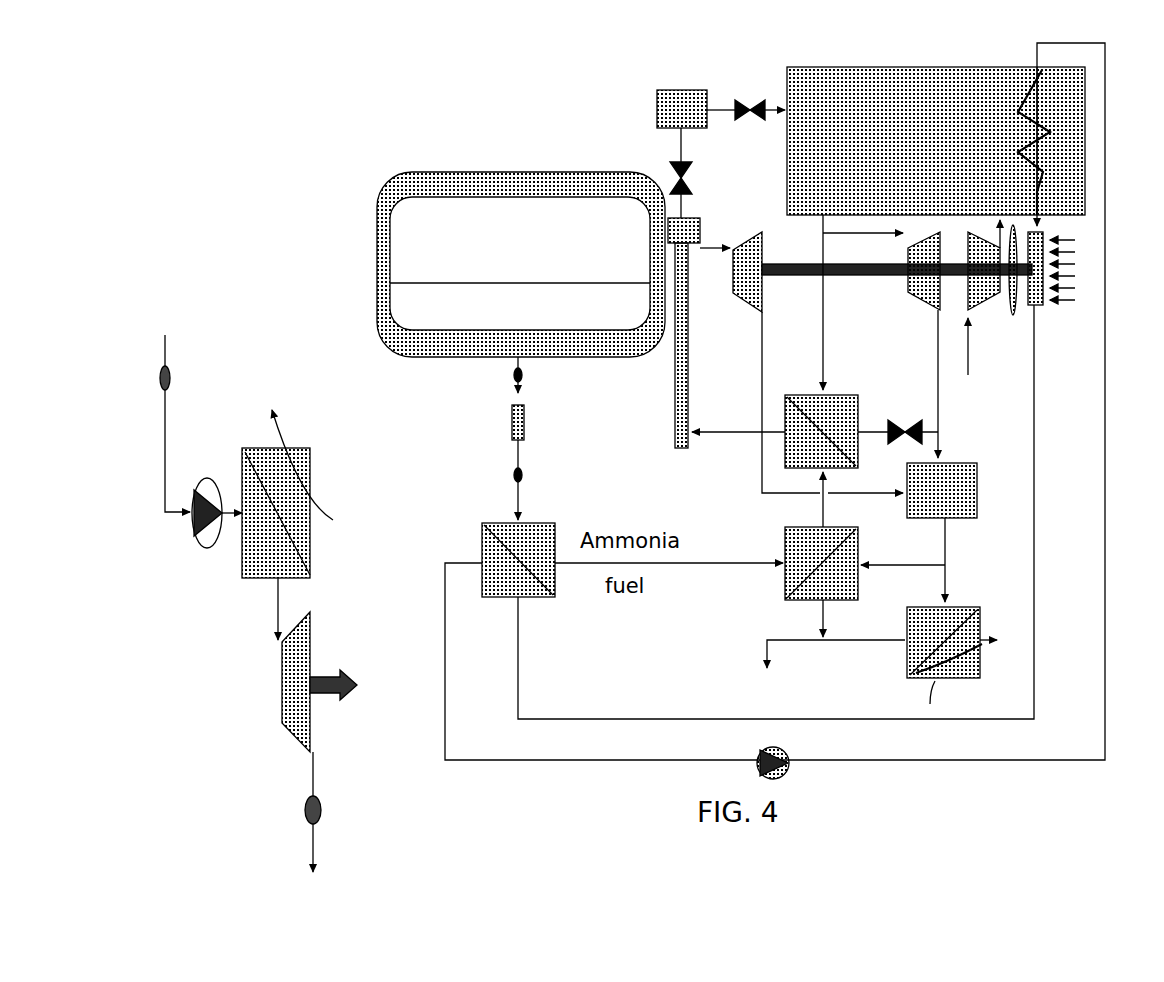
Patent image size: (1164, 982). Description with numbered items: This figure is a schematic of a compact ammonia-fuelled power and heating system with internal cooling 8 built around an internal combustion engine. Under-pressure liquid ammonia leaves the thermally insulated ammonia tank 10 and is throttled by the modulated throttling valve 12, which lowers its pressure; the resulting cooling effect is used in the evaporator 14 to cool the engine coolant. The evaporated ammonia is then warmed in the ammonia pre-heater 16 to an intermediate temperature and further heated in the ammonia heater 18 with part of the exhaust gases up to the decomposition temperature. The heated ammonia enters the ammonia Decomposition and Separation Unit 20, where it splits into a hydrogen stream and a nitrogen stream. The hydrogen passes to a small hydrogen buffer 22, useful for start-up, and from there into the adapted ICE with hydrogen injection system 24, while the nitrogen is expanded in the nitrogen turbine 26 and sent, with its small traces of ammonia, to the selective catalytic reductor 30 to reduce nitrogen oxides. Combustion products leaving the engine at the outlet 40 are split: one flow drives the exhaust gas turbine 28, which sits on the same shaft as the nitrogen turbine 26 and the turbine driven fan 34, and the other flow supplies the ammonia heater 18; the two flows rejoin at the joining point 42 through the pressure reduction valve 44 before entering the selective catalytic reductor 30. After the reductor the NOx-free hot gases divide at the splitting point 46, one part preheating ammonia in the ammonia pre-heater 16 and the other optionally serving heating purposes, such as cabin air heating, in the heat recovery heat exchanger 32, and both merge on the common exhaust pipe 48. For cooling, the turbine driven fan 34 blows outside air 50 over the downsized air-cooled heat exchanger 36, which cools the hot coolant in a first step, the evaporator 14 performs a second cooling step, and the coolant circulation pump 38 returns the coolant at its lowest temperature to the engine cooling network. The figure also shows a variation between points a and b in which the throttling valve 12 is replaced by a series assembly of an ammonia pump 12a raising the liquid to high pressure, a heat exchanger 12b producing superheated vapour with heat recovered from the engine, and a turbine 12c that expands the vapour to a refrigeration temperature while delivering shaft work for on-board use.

The ammonia-fuelled power and heating system with internal cooling 8 is at (520, 126).
The thermally insulated ammonia tank 10 is at (455, 366).
The modulated throttling valve 12 is at (510, 425).
The ammonia pump 12a is at (218, 473).
The heat exchanger 12b is at (296, 402).
The turbine 12c is at (303, 563).
The evaporator for indirect engine cooling 14 is at (484, 522).
The ammonia pre-heater 16 is at (780, 540).
The ammonia heater 18 is at (796, 393).
The ammonia Decomposition and Separation Unit (DSU) 20 is at (688, 386).
The hydrogen buffer 22 is at (704, 128).
The adapted ICE with hydrogen injection system 24 is at (880, 148).
The nitrogen turbine 26 is at (748, 248).
The exhaust gas turbine 28 is at (923, 306).
The selective catalytic reductor (SCR) 30 is at (978, 493).
The heat recovery heat exchanger 32 is at (964, 606).
The turbine driven fan 34 is at (990, 306).
The downsized air-cooled heat exchanger 36 is at (1034, 308).
The coolant circulation pump 38 is at (789, 753).
The outlet 40 is at (816, 236).
The joining point 42 is at (940, 434).
The pressure reduction valve 44 is at (910, 420).
The splitting point 46 is at (947, 567).
The exhaust pipe 48 is at (775, 642).
The outside air 50 is at (1088, 274).